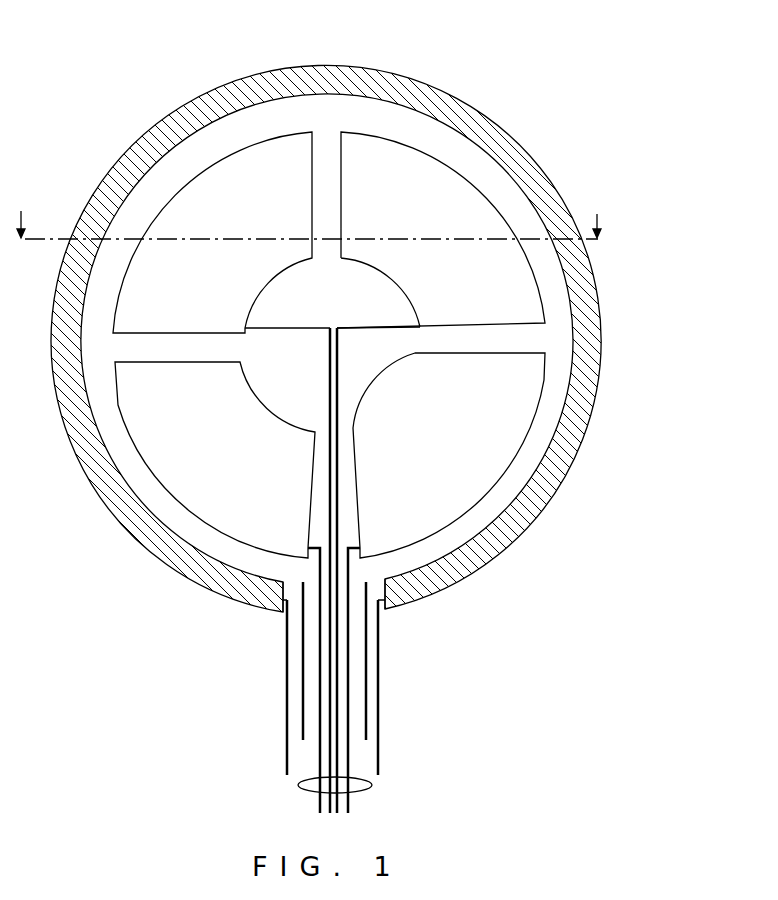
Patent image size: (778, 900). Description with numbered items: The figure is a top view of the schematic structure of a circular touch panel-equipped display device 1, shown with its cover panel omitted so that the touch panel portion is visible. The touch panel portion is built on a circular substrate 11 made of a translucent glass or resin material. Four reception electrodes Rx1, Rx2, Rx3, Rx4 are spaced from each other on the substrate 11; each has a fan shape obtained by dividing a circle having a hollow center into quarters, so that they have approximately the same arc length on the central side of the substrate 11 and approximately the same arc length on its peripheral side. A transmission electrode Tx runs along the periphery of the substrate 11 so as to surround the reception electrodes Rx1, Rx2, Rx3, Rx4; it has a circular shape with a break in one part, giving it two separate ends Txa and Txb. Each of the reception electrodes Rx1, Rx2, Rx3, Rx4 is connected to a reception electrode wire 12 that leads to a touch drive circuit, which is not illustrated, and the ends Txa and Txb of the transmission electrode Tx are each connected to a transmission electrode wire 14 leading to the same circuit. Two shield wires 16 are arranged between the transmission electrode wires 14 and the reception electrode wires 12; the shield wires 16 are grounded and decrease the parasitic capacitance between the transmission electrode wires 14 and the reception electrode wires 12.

The touch panel-equipped display device 1 is at (541, 79).
The substrate 11 is at (322, 110).
The reception electrode wire 12 is at (300, 789).
The transmission electrode wire 14 is at (287, 718).
The shield wire 16 is at (303, 680).
The transmission electrode Tx is at (585, 300).
The end of transmission electrode Txa is at (330, 617).
The end of transmission electrode Txb is at (330, 617).
The reception electrode Rx1 is at (212, 232).
The reception electrode Rx2 is at (215, 460).
The reception electrode Rx3 is at (449, 455).
The reception electrode Rx4 is at (441, 230).